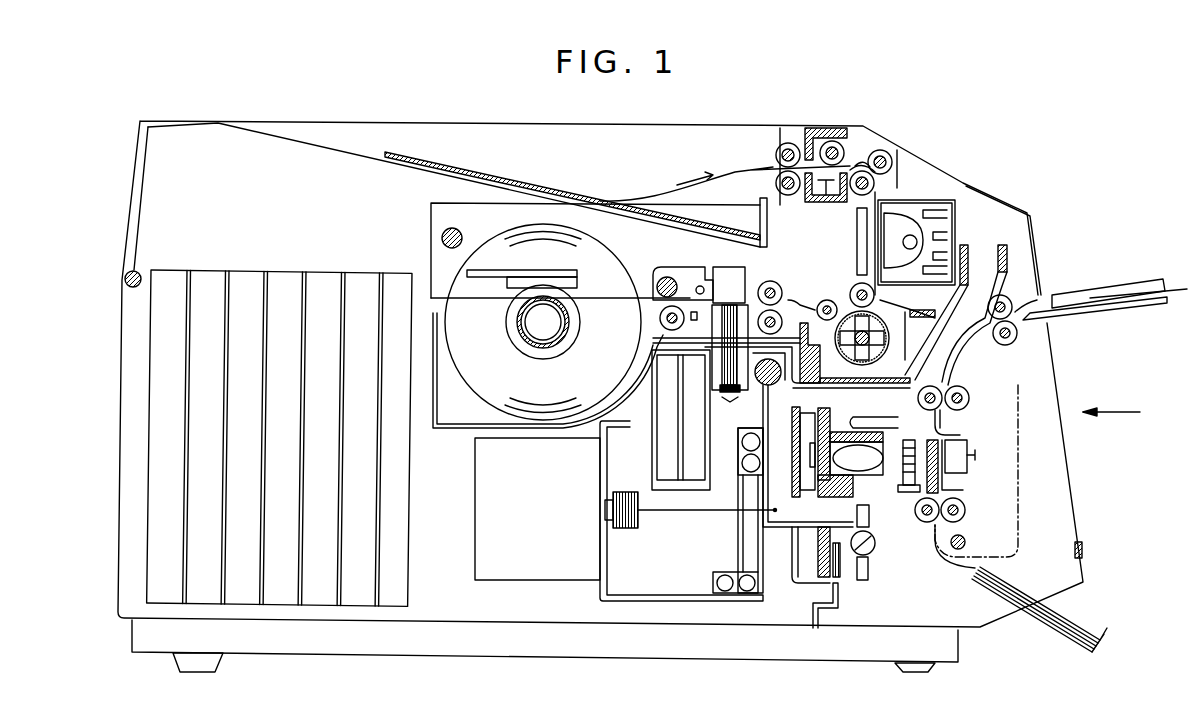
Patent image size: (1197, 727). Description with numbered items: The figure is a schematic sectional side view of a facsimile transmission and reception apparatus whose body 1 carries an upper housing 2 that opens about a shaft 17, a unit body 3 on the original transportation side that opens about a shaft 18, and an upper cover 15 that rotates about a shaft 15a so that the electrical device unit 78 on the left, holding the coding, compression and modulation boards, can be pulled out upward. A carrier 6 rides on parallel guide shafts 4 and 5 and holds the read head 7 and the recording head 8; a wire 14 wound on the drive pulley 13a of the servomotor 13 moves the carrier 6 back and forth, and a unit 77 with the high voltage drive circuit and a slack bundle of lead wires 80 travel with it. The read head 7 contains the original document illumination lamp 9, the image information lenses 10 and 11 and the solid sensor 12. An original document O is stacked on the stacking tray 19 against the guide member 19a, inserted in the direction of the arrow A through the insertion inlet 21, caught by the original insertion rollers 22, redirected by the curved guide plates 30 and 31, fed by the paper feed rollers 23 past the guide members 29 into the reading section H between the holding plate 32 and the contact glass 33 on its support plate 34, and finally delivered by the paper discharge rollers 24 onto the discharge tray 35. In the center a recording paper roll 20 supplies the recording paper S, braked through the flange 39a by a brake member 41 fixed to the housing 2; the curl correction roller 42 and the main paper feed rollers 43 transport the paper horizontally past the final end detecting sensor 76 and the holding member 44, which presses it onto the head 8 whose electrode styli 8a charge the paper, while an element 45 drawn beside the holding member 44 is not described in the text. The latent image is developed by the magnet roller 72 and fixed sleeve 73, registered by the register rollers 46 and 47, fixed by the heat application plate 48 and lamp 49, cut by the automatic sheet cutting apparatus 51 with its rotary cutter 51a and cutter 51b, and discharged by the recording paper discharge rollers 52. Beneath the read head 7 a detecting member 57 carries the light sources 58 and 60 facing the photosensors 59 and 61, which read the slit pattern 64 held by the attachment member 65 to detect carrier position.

The body of the apparatus 1 is at (120, 522).
The upper housing 2 is at (430, 243).
The unit body 3 is at (1018, 536).
The guide shaft 4 is at (770, 386).
The guide shaft 5 is at (868, 555).
The carrier 6 is at (763, 418).
The read head 7 is at (835, 497).
The recording head 8 is at (712, 382).
The electrode styli 8a is at (730, 403).
The original document illumination lamp 9 is at (905, 492).
The image information lens 10 is at (850, 469).
The image information lens 11 is at (840, 437).
The solid sensor 12 is at (808, 452).
The servomotor 13 is at (523, 580).
The drive pulley 13a is at (630, 528).
The wire 14 is at (690, 510).
The upper cover 15 is at (373, 160).
The shaft 15a is at (142, 272).
The shaft 17 is at (461, 233).
The shaft 18 is at (965, 542).
The original document stacking tray 19 is at (1112, 305).
The guide member 19a is at (1142, 287).
The recording paper roll 20 is at (490, 400).
The original document insertion inlet 21 is at (1040, 300).
The original insertion rollers 22 is at (1005, 296).
The paper feed rollers 23 is at (962, 390).
The paper discharge rollers 24 is at (927, 522).
The original document guide members 29 is at (962, 420).
The original transportation guide plate 30 is at (962, 345).
The original transportation guide plate 31 is at (930, 388).
The original document holding plate 32 is at (967, 440).
The contact glass 33 is at (963, 490).
The support plate 34 is at (895, 424).
The original document discharge tray 35 is at (960, 572).
The flange 39a is at (520, 340).
The brake member 41 is at (545, 270).
The curl correction roller 42 is at (660, 318).
The main paper feed rollers 43 is at (769, 281).
The recording paper holding member 44 is at (702, 267).
The pin 45 is at (667, 277).
The register roller 46 is at (824, 300).
The register roller 47 is at (858, 285).
The heat application plate 48 is at (857, 250).
The heat application lamp 49 is at (912, 230).
The automatic sheet cutting apparatus 51 is at (805, 203).
The rotary cutter 51a is at (832, 140).
The cutter 51b is at (826, 202).
The recording paper discharge rollers 52 is at (888, 152).
The detecting member 57 is at (825, 497).
The light source 58 is at (812, 575).
The photosensor 59 is at (840, 565).
The light source 60 is at (792, 510).
The photosensor 61 is at (880, 540).
The slit pattern 64 is at (834, 606).
The attachment member 65 is at (813, 612).
The magnet roller 72 is at (852, 428).
The fixed sleeve 73 is at (906, 327).
The recording paper final end detecting sensor 76 is at (729, 285).
The unit 77 is at (652, 458).
The electrical device unit 78 is at (405, 586).
The bundle of lead wires 80 is at (738, 565).
The recording paper S is at (801, 294).
The original document reading section H is at (980, 462).
The arrow A is at (1111, 426).
The original document O is at (1182, 293).